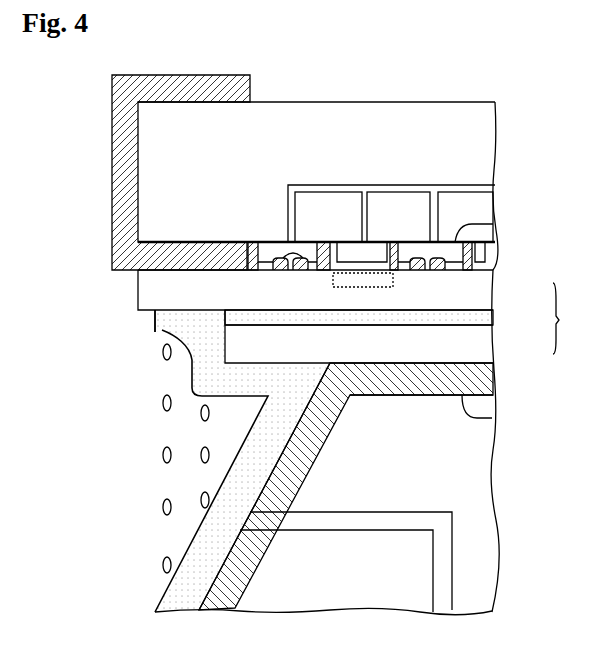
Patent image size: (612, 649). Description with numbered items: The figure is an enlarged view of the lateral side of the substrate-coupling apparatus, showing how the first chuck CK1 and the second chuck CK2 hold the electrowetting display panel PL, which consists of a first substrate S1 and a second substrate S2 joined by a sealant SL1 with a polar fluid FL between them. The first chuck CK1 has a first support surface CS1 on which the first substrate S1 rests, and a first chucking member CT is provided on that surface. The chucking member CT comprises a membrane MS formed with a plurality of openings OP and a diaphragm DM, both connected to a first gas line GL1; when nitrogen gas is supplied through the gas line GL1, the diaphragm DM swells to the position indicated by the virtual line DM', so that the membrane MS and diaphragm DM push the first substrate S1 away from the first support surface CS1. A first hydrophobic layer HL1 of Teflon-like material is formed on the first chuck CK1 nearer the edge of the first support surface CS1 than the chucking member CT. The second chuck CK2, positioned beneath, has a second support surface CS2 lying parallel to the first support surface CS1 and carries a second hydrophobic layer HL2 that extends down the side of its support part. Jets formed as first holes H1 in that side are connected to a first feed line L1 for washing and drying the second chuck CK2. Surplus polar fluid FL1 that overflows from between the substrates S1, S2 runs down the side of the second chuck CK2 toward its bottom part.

The first hydrophobic layer HL1 is at (112, 166).
The first chuck CK1 is at (499, 162).
The second chuck CK2 is at (499, 492).
The first gas line GL1 is at (410, 185).
The first support surface CS1 is at (498, 229).
The openings OP is at (288, 245).
The membrane MS is at (300, 255).
The diaphragm DM is at (323, 209).
The first chucking member CT is at (348, 144).
The virtual line DM' is at (391, 287).
The first substrate S1 is at (485, 291).
The polar fluid FL is at (493, 317).
The second substrate S2 is at (485, 344).
The electrowetting display panel PL is at (566, 318).
The second support surface CS2 is at (492, 416).
The surplus polar fluid FL1 is at (190, 365).
The sealant SL1 is at (162, 330).
The second hydrophobic layer HL2 is at (272, 470).
The first hole H1 is at (248, 518).
The first feed line L1 is at (316, 530).